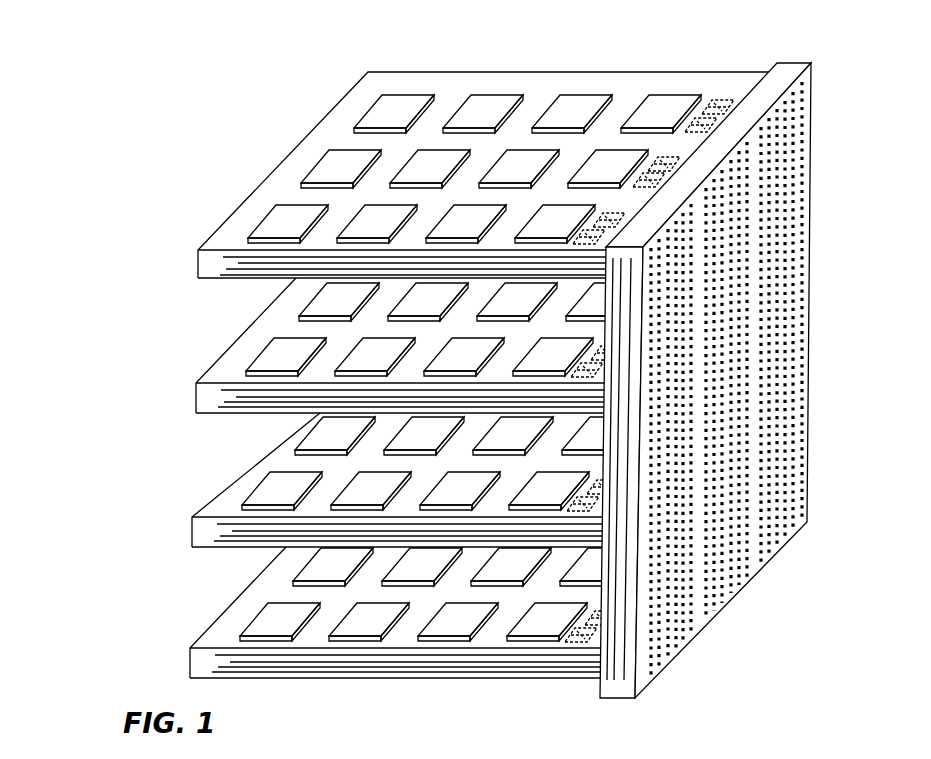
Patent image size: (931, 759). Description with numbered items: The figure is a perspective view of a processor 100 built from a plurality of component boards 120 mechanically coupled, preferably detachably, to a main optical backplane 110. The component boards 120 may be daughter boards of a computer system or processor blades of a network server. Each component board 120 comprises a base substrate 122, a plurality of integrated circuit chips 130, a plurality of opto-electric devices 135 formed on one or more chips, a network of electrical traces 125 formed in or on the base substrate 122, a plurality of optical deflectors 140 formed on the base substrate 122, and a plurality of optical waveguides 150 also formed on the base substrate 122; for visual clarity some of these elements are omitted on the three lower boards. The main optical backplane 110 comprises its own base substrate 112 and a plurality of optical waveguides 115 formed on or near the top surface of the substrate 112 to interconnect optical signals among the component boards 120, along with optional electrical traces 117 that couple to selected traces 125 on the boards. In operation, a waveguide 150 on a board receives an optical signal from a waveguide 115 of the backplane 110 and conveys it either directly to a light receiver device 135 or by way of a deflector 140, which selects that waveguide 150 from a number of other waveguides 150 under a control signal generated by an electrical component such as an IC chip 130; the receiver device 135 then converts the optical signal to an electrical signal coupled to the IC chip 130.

The processor 100 is at (214, 58).
The main optical backplane 110 is at (598, 698).
The base substrate 112 is at (618, 688).
The optical waveguides 115 is at (762, 555).
The electrical traces 117 is at (637, 694).
The component boards 120 is at (198, 250).
The base substrate 122 is at (206, 265).
The electrical traces 125 is at (223, 258).
The integrated circuit chips 130 is at (488, 107).
The opto-electric devices 135 is at (550, 227).
The optical deflectors 140 is at (662, 158).
The optical waveguides 150 is at (630, 184).